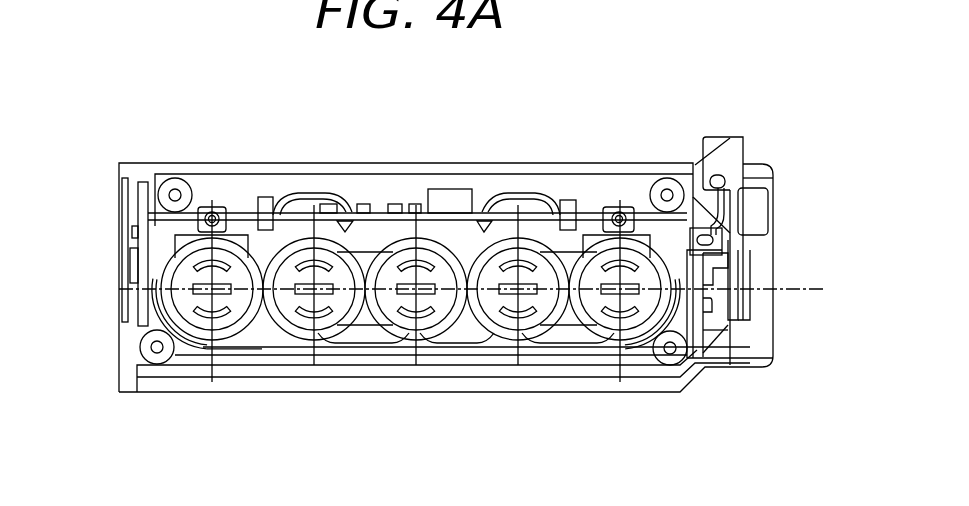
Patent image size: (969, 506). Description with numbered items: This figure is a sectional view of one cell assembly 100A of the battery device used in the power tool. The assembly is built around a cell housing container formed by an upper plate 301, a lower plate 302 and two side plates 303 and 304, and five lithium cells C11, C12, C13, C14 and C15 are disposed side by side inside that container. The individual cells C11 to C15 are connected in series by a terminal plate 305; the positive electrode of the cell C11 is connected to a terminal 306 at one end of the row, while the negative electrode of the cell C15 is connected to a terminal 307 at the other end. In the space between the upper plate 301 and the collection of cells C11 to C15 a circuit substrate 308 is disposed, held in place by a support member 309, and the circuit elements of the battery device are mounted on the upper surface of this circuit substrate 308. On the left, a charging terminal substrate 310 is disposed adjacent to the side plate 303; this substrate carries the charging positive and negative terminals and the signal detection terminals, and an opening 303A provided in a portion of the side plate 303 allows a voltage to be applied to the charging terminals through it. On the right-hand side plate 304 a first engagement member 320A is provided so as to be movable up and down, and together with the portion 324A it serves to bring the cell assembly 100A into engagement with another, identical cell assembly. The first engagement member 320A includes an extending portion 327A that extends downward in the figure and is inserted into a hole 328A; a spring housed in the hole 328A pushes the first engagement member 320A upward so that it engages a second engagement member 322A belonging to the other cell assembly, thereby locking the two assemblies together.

The cell assembly 100A is at (442, 128).
The upper plate 301 is at (292, 163).
The lower plate 302 is at (183, 378).
The side plate 303 is at (121, 303).
The opening 303A is at (122, 257).
The side plate 304 is at (757, 353).
The terminal plate 305 is at (238, 297).
The terminal 306 is at (212, 205).
The terminal 307 is at (610, 206).
The circuit substrate 308 is at (378, 204).
The support member 309 is at (265, 197).
The charging terminal substrate 310 is at (140, 205).
The first engagement member 320A is at (738, 160).
The second engagement member 322A is at (717, 328).
The lever arm 324A is at (716, 137).
The extending portion 327A is at (744, 258).
The hole 328A is at (744, 300).
The lithium cell C11 is at (247, 338).
The lithium cell C12 is at (353, 335).
The lithium cell C13 is at (452, 335).
The lithium cell C14 is at (548, 335).
The lithium cell C15 is at (640, 343).